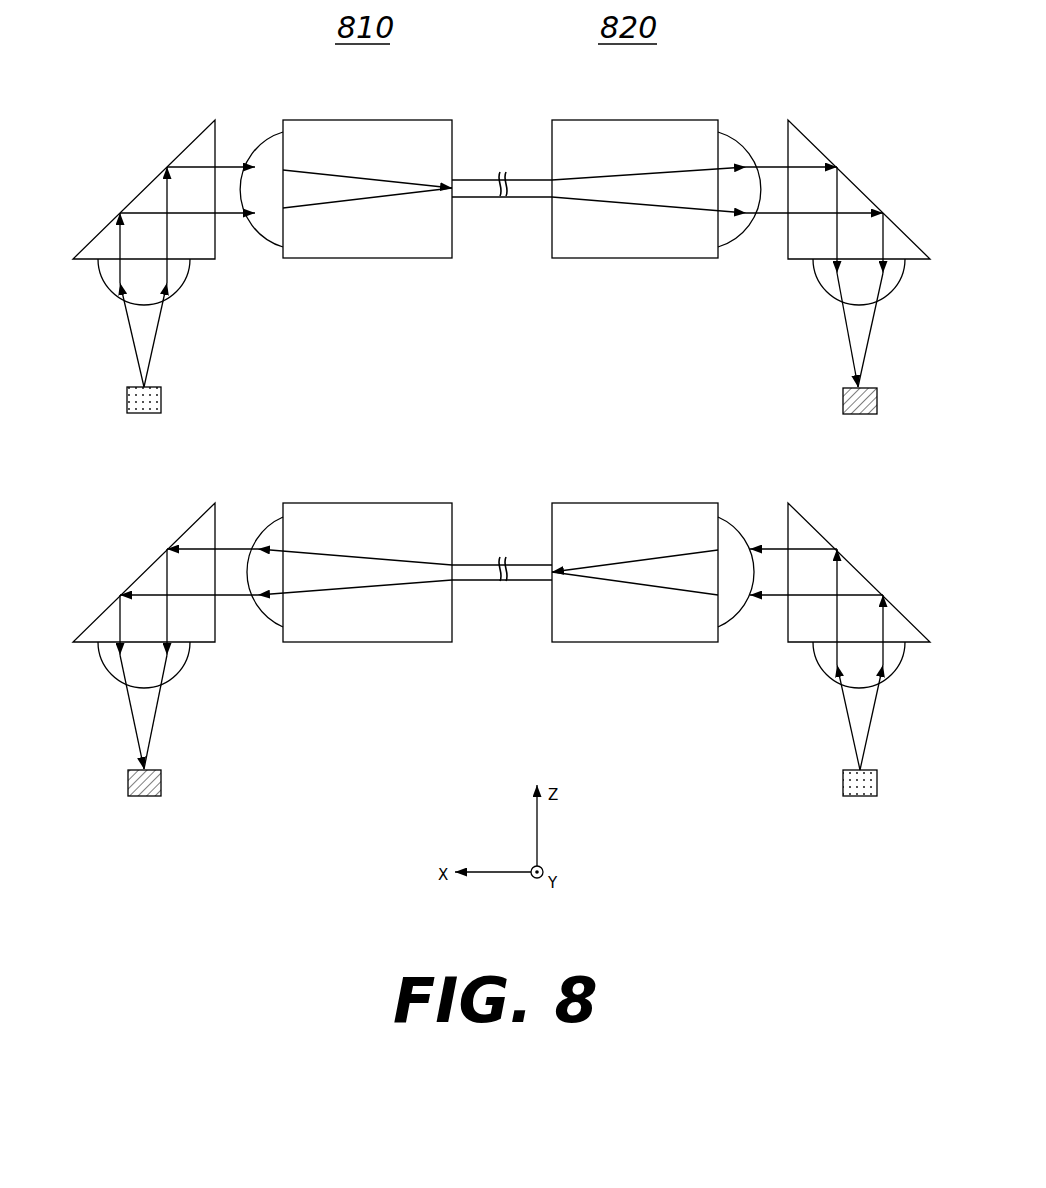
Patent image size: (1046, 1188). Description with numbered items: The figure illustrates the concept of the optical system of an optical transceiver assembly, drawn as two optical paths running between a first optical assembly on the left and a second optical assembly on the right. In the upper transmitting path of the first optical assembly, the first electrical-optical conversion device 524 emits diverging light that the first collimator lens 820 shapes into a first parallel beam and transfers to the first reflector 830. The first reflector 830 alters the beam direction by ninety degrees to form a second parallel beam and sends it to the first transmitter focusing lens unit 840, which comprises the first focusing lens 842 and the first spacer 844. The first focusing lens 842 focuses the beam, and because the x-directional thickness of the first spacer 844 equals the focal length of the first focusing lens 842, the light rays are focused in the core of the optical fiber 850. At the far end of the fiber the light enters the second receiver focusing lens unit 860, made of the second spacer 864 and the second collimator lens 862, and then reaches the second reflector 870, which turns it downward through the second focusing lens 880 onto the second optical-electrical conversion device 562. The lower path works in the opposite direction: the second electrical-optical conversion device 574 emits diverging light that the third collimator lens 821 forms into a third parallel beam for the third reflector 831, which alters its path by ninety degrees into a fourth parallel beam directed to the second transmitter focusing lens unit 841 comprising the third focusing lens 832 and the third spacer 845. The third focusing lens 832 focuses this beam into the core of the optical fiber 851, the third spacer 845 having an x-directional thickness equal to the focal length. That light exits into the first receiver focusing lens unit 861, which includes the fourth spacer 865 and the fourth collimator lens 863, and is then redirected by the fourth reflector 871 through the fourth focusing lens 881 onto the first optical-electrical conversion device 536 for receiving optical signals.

The first collimator lens 820 is at (100, 272).
The third collimator lens 821 is at (905, 655).
The first reflector 830 is at (138, 190).
The third reflector 831 is at (862, 574).
The third focusing lens 832 is at (735, 630).
The first transmitter focusing lens unit 840 is at (360, 316).
The second transmitter focusing lens unit 841 is at (765, 699).
The first focusing lens 842 is at (269, 250).
The first spacer 844 is at (337, 260).
The third spacer 845 is at (668, 643).
The optical fiber 850 is at (530, 178).
The optical fiber 851 is at (530, 563).
The second receiver focusing lens unit 860 is at (765, 316).
The first receiver focusing lens unit 861 is at (360, 699).
The second collimator lens 862 is at (735, 250).
The fourth collimator lens 863 is at (269, 630).
The second spacer 864 is at (668, 260).
The fourth spacer 865 is at (337, 643).
The second reflector 870 is at (862, 190).
The fourth reflector 871 is at (138, 574).
The second focusing lens 880 is at (905, 272).
The fourth focusing lens 881 is at (100, 655).
The first electrical-optical conversion device 524 is at (127, 400).
The first optical-electrical conversion device 536 is at (128, 782).
The second optical-electrical conversion device 562 is at (877, 400).
The second electrical-optical conversion device 574 is at (877, 783).